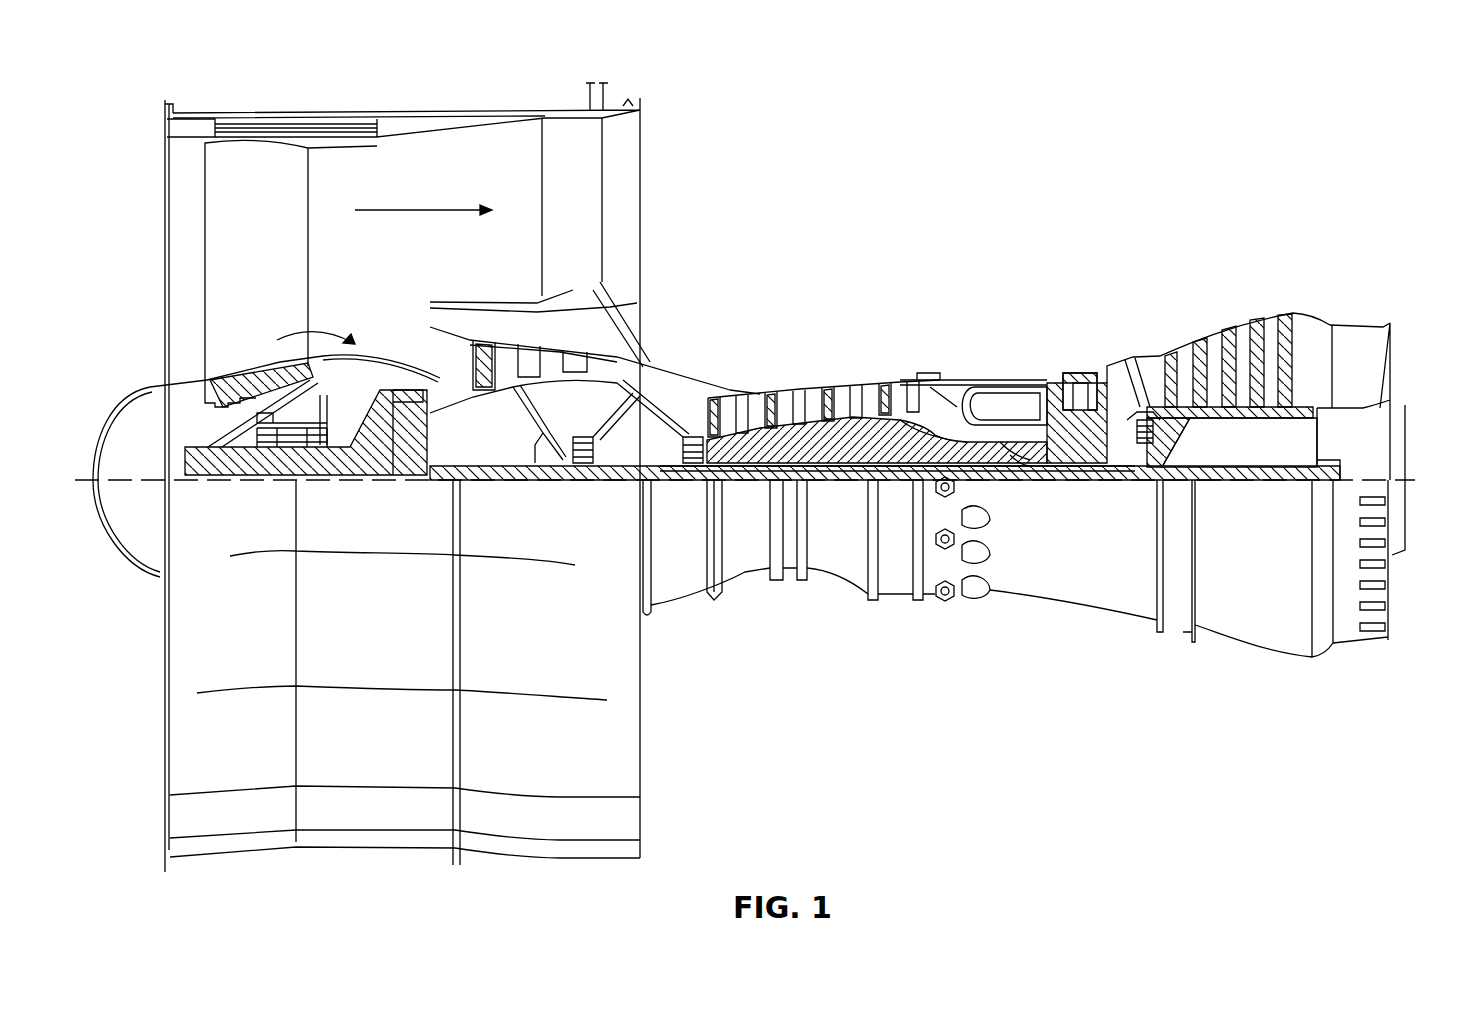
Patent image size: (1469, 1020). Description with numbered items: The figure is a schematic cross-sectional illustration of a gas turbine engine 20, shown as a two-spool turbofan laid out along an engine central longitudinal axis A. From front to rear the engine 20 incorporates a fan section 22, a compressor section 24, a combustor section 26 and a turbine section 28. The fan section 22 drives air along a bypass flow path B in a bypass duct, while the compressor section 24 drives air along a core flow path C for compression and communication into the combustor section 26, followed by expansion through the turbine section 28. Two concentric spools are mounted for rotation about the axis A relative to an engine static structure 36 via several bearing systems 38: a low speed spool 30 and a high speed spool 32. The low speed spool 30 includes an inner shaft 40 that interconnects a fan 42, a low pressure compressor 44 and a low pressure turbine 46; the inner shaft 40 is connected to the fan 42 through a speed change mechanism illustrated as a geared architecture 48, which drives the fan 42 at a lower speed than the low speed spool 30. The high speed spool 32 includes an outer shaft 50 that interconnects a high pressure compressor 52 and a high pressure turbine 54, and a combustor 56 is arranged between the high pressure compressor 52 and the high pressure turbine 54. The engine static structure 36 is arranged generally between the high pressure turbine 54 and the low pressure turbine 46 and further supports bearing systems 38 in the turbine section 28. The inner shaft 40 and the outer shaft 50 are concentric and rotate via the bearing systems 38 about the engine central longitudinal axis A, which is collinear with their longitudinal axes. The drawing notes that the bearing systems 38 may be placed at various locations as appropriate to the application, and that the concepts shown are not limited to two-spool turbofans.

The gas turbine engine 20 is at (1208, 151).
The fan section 22 is at (272, 105).
The compressor section 24 is at (828, 344).
The combustor section 26 is at (994, 340).
The turbine section 28 is at (1142, 326).
The low speed spool 30 is at (862, 484).
The high speed spool 32 is at (912, 416).
The engine static structure 36 is at (900, 602).
The bearing systems 38 is at (272, 448).
The inner shaft 40 is at (652, 487).
The fan 42 is at (284, 241).
The low pressure compressor 44 is at (553, 353).
The low pressure turbine 46 is at (1252, 344).
The geared architecture 48 is at (405, 457).
The outer shaft 50 is at (1026, 460).
The high pressure compressor 52 is at (826, 446).
The high pressure turbine 54 is at (1078, 377).
The combustor 56 is at (1005, 398).
The engine central longitudinal axis A is at (1415, 476).
The bypass flow path B is at (426, 210).
The core flow path C is at (290, 338).